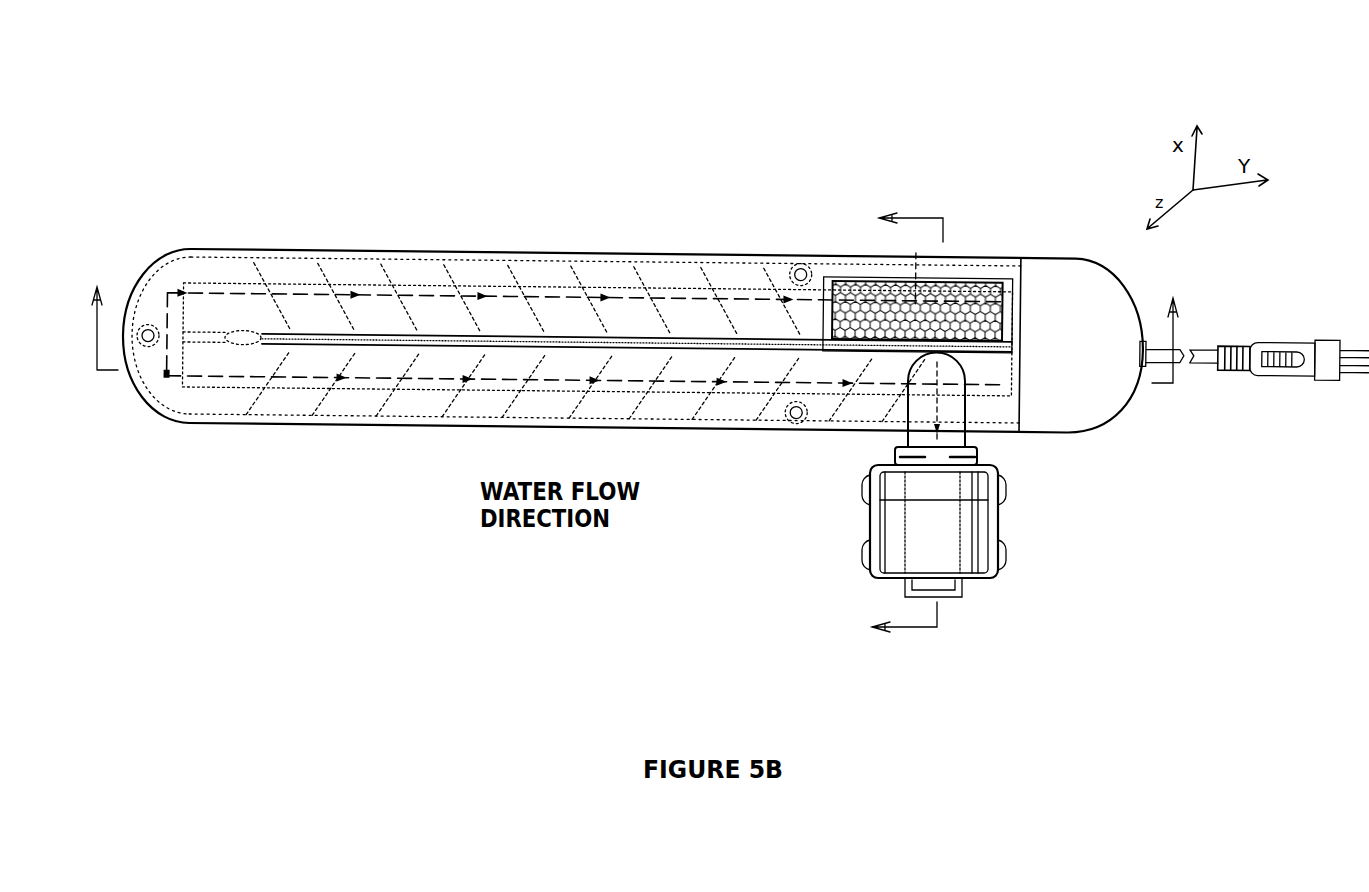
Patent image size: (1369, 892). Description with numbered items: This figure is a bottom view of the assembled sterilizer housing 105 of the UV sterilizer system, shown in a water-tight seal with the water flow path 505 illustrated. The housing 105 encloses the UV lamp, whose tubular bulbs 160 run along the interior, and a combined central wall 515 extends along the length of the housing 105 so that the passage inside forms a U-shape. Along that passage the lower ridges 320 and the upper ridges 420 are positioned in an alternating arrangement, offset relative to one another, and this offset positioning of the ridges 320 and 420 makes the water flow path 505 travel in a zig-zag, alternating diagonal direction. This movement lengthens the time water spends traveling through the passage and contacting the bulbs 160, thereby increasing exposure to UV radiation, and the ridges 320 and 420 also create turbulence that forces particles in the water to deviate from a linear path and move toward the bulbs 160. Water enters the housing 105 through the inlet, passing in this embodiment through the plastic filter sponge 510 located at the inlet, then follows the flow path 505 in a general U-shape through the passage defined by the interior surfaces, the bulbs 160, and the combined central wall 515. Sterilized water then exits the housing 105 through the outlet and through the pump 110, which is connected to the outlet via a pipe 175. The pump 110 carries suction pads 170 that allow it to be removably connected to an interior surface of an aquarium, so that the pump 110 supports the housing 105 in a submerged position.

The sterilizer housing 105 is at (222, 249).
The pump 110 is at (952, 558).
The bulbs 160 is at (215, 320).
The suction pads 170 is at (971, 556).
The pipe 175 is at (947, 405).
The lower ridges 320 is at (288, 258).
The upper ridges 420 is at (356, 260).
The water flow path 505 is at (428, 293).
The plastic filter sponge 510 is at (955, 300).
The combined central wall 515 is at (367, 347).